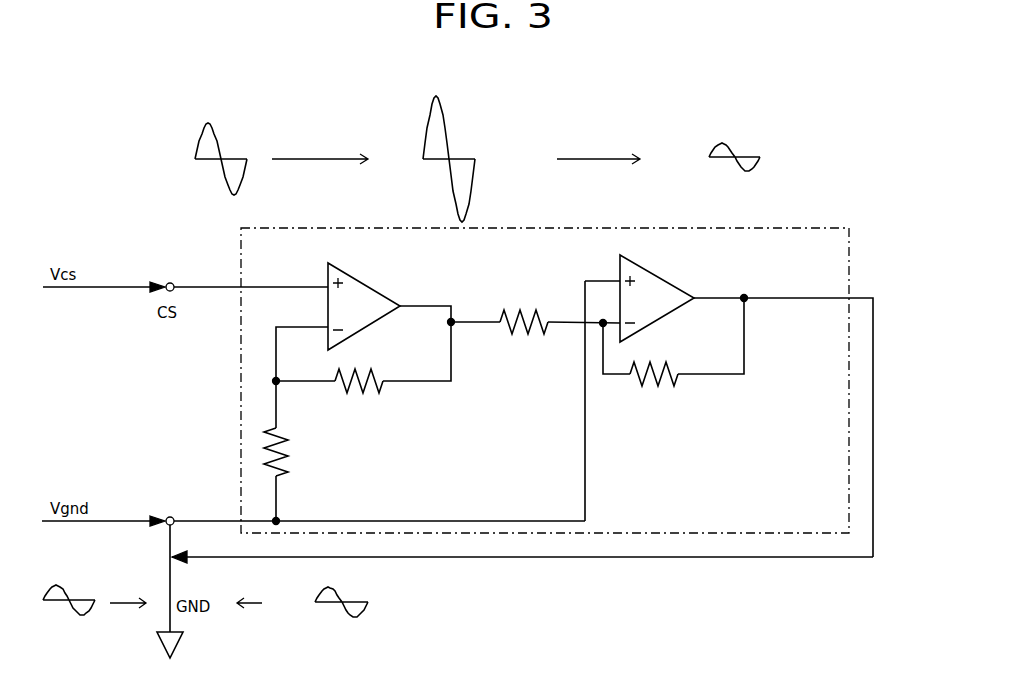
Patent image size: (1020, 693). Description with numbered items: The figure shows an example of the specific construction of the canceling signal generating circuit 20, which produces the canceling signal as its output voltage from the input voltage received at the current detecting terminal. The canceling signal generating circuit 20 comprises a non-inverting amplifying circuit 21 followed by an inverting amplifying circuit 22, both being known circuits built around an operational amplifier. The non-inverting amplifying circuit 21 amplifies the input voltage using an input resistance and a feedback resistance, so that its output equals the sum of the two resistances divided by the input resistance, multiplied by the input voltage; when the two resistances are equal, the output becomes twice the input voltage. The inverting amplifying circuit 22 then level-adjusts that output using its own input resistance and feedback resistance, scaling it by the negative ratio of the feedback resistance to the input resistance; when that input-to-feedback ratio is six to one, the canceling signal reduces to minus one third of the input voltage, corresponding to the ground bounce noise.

The canceling signal generating circuit 20 is at (851, 256).
The non-inverting amplifying circuit 21 is at (327, 272).
The inverting amplifying circuit 22 is at (620, 263).